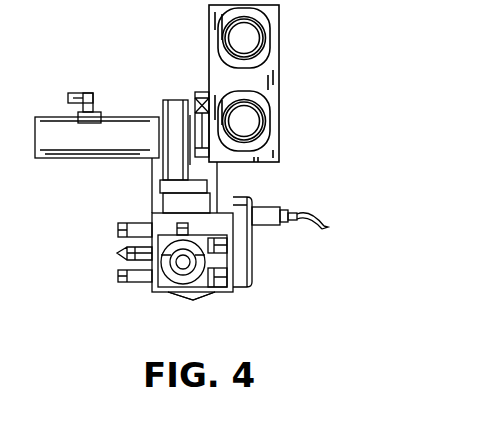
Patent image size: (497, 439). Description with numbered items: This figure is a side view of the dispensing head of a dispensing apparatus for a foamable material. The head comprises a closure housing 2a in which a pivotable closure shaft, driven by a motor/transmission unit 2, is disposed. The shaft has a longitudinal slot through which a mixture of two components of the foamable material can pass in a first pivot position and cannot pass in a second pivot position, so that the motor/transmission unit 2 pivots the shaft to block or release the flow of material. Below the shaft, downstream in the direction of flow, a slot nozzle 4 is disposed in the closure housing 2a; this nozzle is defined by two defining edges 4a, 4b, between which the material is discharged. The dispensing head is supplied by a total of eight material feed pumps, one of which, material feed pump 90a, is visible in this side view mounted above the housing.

The material feed pump 90a is at (128, 117).
The motor/transmission unit 2 is at (220, 228).
The closure housing 2a is at (251, 272).
The slot nozzle 4 is at (192, 295).
The defining edge 4a is at (203, 295).
The defining edge 4b is at (173, 295).